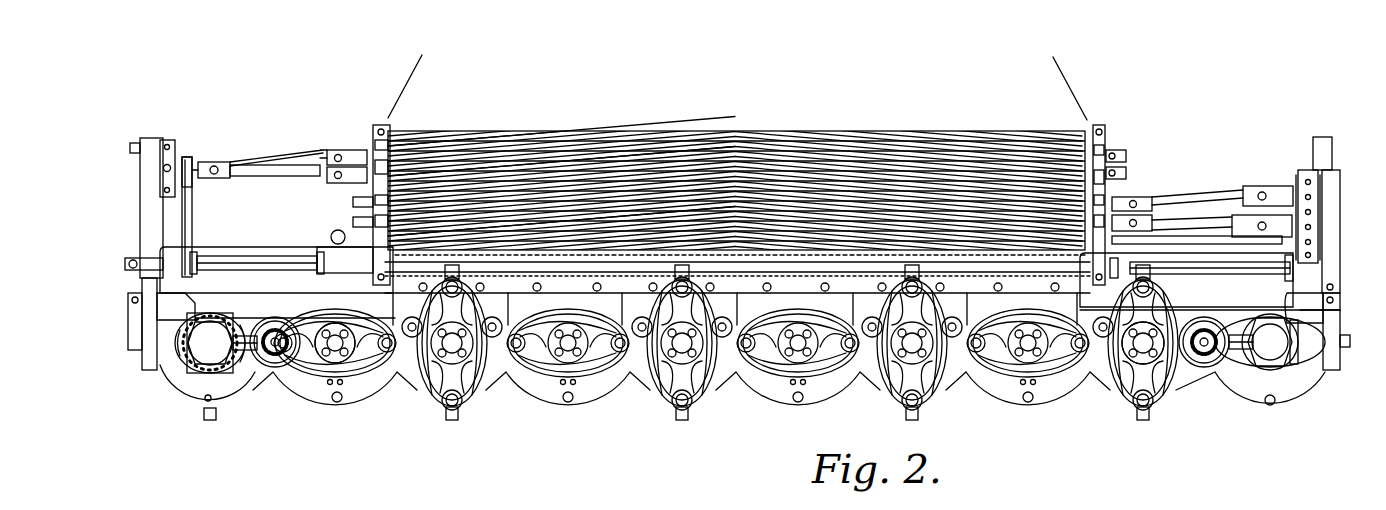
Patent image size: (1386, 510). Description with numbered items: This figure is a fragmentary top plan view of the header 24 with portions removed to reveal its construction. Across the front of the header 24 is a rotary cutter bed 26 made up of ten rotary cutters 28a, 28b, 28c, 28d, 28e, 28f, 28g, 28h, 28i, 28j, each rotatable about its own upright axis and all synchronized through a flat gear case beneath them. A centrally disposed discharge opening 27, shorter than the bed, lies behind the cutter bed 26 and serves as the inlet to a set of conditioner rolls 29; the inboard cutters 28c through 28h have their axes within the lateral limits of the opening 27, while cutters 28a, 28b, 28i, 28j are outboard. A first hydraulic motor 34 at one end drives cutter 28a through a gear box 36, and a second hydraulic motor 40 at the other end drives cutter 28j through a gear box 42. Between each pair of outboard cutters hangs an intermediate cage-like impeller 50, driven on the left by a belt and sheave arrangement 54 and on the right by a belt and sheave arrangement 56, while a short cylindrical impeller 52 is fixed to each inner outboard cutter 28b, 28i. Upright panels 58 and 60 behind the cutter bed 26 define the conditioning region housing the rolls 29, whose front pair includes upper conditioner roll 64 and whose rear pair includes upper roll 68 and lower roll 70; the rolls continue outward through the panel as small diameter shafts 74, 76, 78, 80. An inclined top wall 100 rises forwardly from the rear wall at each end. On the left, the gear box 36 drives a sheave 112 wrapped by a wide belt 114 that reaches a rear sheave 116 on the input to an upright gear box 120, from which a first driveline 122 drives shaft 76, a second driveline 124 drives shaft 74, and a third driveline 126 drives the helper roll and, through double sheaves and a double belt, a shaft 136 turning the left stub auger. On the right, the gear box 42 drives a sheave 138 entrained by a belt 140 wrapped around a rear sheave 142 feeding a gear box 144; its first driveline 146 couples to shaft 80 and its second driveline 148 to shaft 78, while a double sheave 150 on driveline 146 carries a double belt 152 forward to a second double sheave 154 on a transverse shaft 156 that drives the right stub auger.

The header 24 is at (1322, 135).
The rotary cutter bed 26 is at (1326, 375).
The discharge opening 27 is at (409, 300).
The rotary cutter 28a is at (1305, 352).
The rotary cutter 28b is at (1150, 380).
The rotary cutter 28c is at (1005, 380).
The rotary cutter 28d is at (890, 382).
The rotary cutter 28e is at (772, 380).
The rotary cutter 28f is at (660, 382).
The rotary cutter 28g is at (562, 380).
The rotary cutter 28h is at (438, 382).
The rotary cutter 28i is at (312, 365).
The rotary cutter 28j is at (185, 388).
The conditioner rolls 29 is at (766, 121).
The first hydraulic motor 34 is at (1270, 350).
The gear box 36 is at (1293, 356).
The second hydraulic motor 40 is at (210, 350).
The gear box 42 is at (190, 352).
The intermediate impeller 50 is at (276, 362).
The short impeller 52 is at (333, 318).
The belt and sheave arrangement 54 is at (1242, 352).
The belt and sheave arrangement 56 is at (246, 348).
The panel 58 is at (370, 148).
The panel 60 is at (1101, 135).
The upper conditioner roll 64 is at (642, 210).
The upper roll 68 is at (532, 158).
The lower roll 70 is at (432, 136).
The shaft 74 is at (355, 222).
The shaft 76 is at (354, 202).
The shaft 78 is at (340, 180).
The shaft 80 is at (336, 154).
The inclined top wall 100 is at (1100, 300).
The sheave 112 is at (1334, 358).
The belt 114 is at (1332, 312).
The sheave 116 is at (1335, 185).
The upright gear box 120 is at (1312, 222).
The first driveline 122 is at (1220, 195).
The second driveline 124 is at (1210, 215).
The third driveline 126 is at (1190, 242).
The shaft 136 is at (1250, 270).
The sheave 138 is at (134, 345).
The belt 140 is at (147, 362).
The rear sheave 142 is at (140, 170).
The gear box 144 is at (170, 150).
The first driveline 146 is at (280, 160).
The second driveline 148 is at (270, 170).
The double sheave 150 is at (190, 160).
The double belt 152 is at (190, 212).
The second double sheave 154 is at (185, 262).
The transverse shaft 156 is at (265, 268).